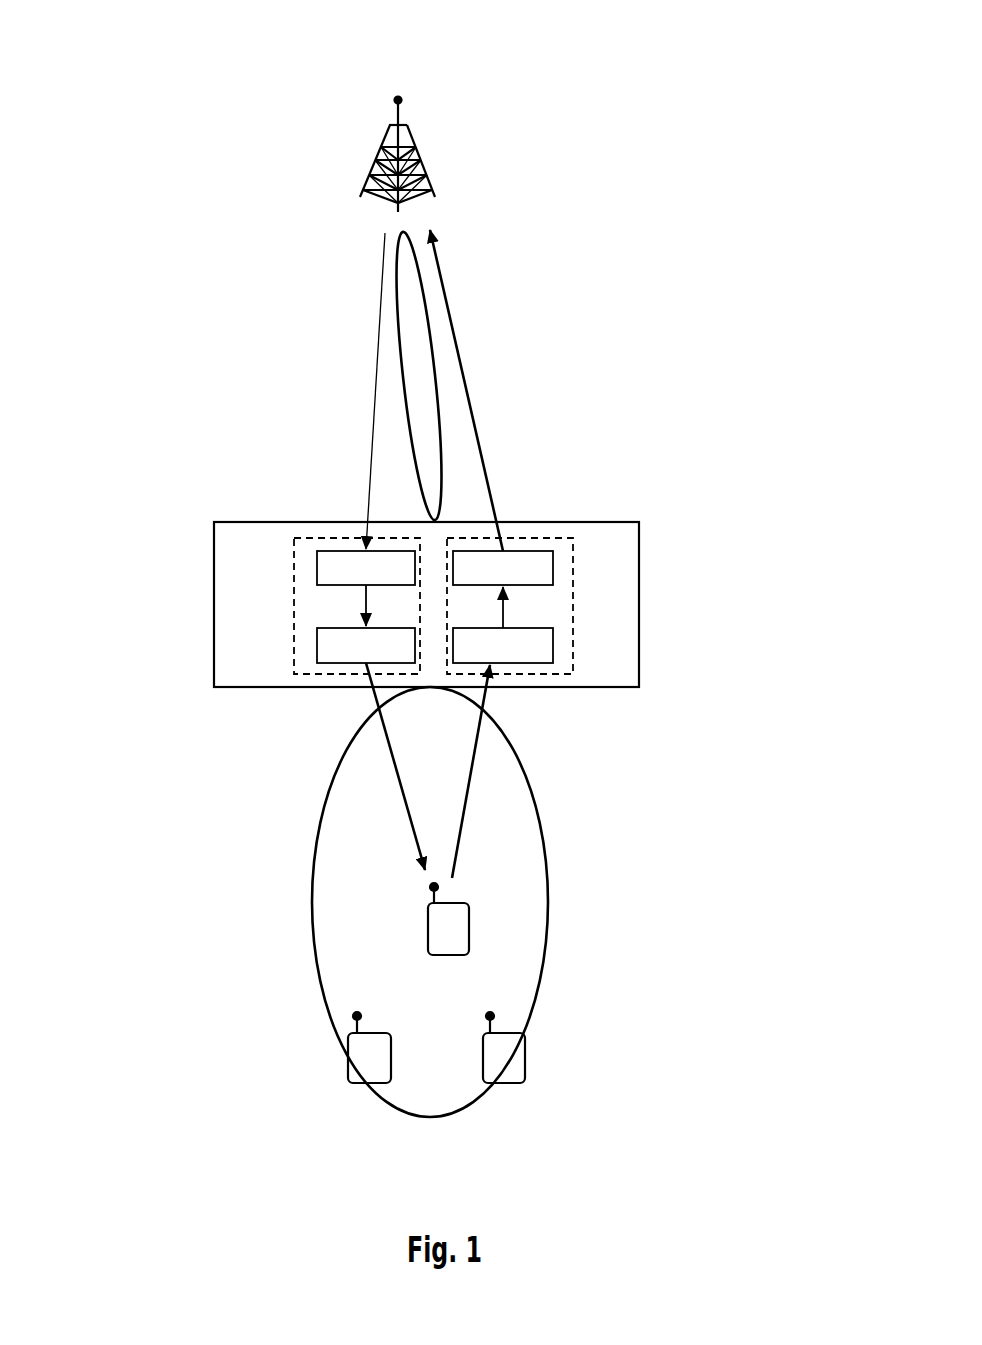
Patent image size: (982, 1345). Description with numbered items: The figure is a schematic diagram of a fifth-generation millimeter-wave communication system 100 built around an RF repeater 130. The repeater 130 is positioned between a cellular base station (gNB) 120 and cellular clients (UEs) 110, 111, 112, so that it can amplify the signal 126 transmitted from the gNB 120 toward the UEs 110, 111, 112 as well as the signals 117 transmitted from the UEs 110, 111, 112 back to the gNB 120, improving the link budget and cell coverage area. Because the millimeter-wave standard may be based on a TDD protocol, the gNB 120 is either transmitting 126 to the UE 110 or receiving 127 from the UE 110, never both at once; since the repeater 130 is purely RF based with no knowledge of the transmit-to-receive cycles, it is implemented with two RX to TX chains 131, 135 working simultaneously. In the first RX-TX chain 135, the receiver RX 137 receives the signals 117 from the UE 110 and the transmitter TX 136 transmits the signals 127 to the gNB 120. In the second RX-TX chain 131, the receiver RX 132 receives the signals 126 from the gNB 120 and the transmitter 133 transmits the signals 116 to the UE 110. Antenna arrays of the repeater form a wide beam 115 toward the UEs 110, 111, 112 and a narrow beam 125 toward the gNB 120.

The 5G mmW communication system 100 is at (165, 101).
The cellular client (UE) 110 is at (424, 922).
The cellular client (UE) 111 is at (347, 1066).
The cellular client (UE) 112 is at (533, 1056).
The wide beam 115 is at (548, 805).
The signals transmitted to the UE 116 is at (389, 770).
The signals transmitted from the UEs 117 is at (486, 741).
The cellular base station (gNB) 120 is at (444, 159).
The narrow beam 125 is at (441, 368).
The signal transmitted from the gNB 126 is at (361, 467).
The signals transmitted to the gNB 127 is at (490, 455).
The RF repeater 130 is at (619, 516).
The second RX-TX chain 131 is at (287, 597).
The receiver RX 132 is at (325, 578).
The transmitter 133 is at (325, 660).
The first RX-TX chain 135 is at (582, 606).
The transmitter TX 136 is at (545, 563).
The receiver RX 137 is at (545, 648).